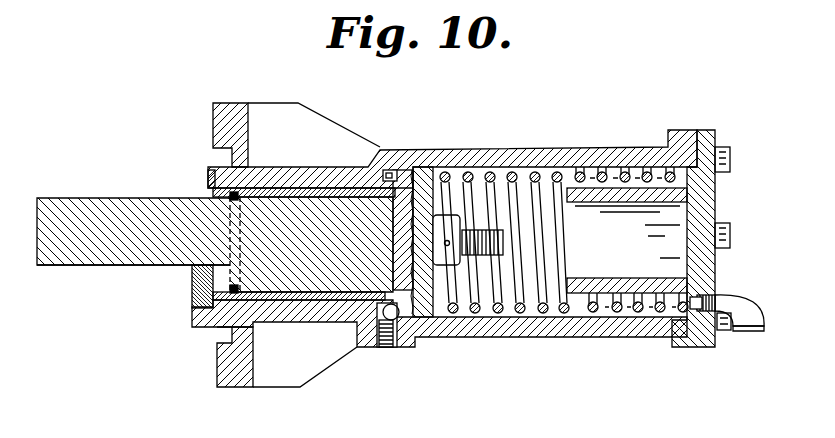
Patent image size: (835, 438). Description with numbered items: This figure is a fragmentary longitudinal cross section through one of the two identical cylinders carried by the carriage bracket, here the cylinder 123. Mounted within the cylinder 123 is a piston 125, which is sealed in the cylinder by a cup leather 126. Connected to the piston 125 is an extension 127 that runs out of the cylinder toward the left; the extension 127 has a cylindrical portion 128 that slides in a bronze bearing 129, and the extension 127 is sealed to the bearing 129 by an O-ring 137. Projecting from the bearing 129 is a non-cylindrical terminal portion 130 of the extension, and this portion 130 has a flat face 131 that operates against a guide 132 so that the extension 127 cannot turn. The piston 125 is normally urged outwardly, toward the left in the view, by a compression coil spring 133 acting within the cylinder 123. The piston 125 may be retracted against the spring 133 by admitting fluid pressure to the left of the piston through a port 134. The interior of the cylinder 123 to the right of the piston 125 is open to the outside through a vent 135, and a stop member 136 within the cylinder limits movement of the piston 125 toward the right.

The cylinder 123 is at (618, 133).
The piston 125 is at (434, 168).
The cup leather 126 is at (414, 318).
The extension 127 is at (312, 212).
The cylindrical portion 128 is at (330, 268).
The bronze bearing 129 is at (266, 300).
The non-cylindrical terminal portion 130 is at (108, 214).
The flat face 131 is at (108, 266).
The guide 132 is at (193, 288).
The compression coil spring 133 is at (644, 362).
The port 134 is at (393, 348).
The vent 135 is at (788, 284).
The stop member 136 is at (644, 237).
The O-ring 137 is at (232, 188).